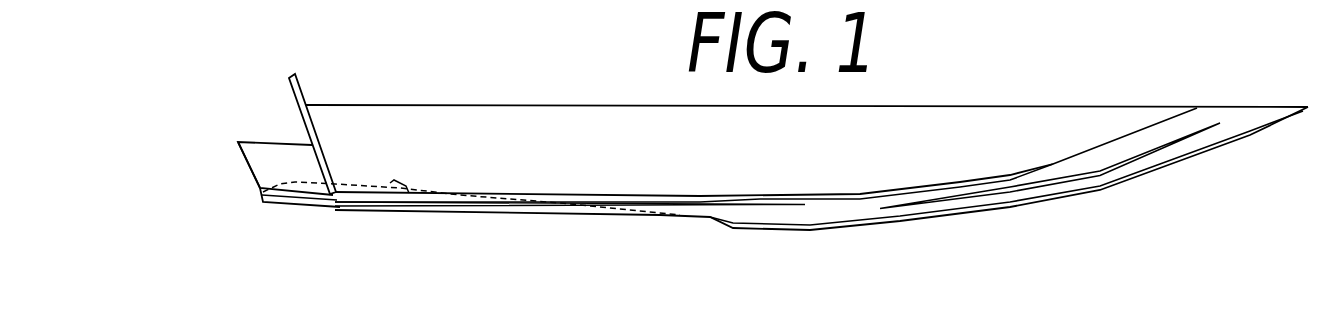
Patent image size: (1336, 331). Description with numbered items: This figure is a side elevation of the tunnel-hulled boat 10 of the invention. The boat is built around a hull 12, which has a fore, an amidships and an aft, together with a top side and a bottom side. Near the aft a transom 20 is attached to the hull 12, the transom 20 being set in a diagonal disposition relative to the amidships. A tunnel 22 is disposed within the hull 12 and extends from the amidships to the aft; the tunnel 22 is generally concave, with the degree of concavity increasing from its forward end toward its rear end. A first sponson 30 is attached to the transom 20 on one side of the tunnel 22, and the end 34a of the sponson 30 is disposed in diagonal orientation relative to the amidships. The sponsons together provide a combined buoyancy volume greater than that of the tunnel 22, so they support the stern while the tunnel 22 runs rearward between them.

The tunnel-hulled boat 10 is at (561, 44).
The hull 12 is at (572, 143).
The transom 20 is at (290, 84).
The tunnel 22 is at (408, 195).
The first sponson 30 is at (260, 145).
The end of first sponson 34a is at (248, 169).